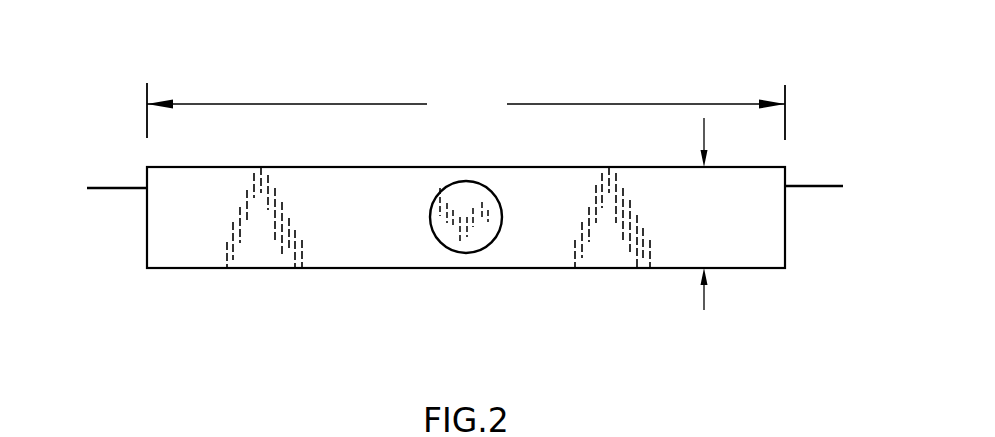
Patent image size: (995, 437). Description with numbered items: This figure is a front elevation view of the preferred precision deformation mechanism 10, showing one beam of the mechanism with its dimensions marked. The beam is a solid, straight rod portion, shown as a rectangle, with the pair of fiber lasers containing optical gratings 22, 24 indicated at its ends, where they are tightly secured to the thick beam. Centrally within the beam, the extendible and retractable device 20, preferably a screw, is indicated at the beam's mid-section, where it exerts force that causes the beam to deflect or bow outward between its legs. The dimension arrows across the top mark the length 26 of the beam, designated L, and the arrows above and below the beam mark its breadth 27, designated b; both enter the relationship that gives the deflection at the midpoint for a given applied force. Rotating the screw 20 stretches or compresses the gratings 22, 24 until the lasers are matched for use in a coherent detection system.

The mechanism 10 is at (228, 318).
The extendible and retractable device 20 is at (480, 240).
The optical grating 22 is at (105, 187).
The optical grating 24 is at (832, 184).
The length 26 is at (593, 103).
The breadth 27 is at (705, 302).